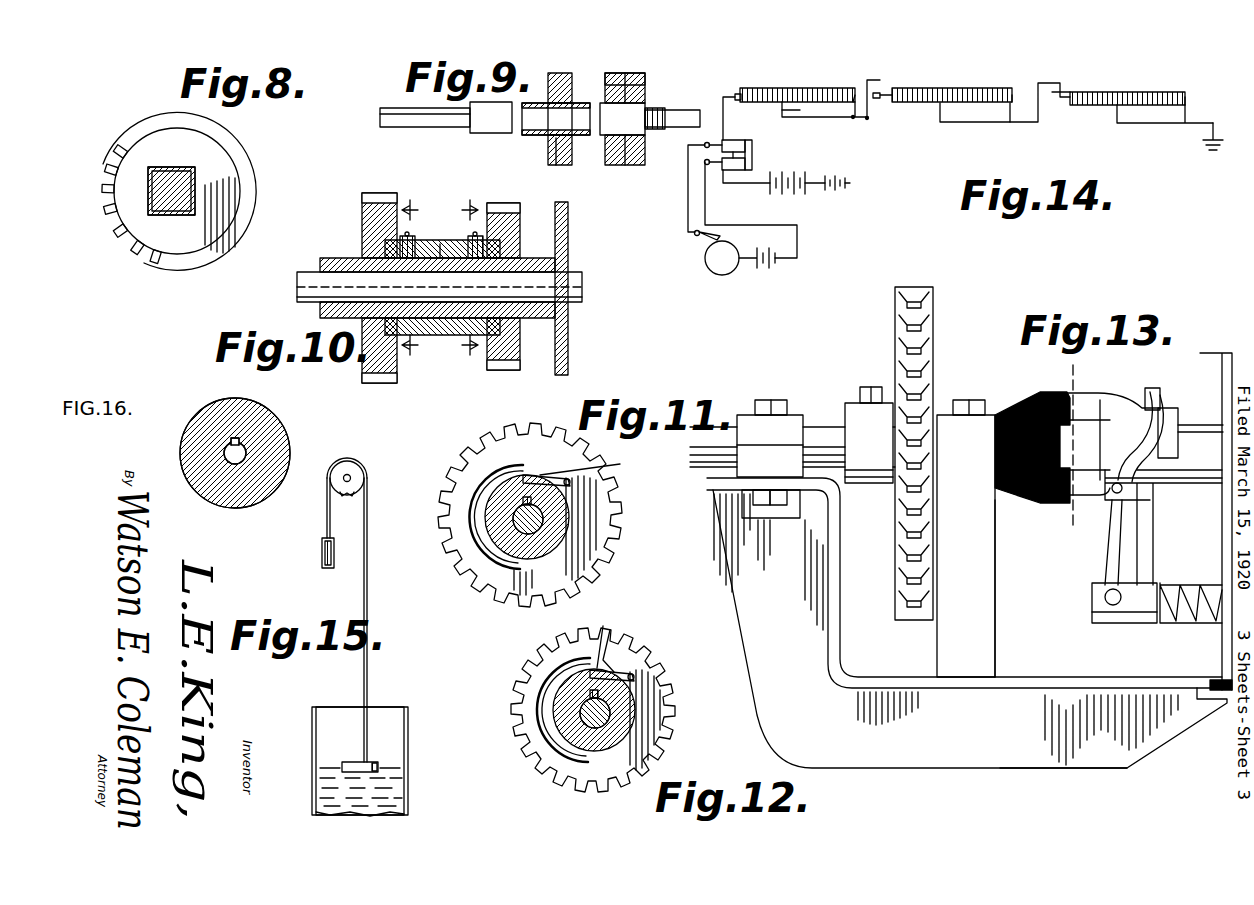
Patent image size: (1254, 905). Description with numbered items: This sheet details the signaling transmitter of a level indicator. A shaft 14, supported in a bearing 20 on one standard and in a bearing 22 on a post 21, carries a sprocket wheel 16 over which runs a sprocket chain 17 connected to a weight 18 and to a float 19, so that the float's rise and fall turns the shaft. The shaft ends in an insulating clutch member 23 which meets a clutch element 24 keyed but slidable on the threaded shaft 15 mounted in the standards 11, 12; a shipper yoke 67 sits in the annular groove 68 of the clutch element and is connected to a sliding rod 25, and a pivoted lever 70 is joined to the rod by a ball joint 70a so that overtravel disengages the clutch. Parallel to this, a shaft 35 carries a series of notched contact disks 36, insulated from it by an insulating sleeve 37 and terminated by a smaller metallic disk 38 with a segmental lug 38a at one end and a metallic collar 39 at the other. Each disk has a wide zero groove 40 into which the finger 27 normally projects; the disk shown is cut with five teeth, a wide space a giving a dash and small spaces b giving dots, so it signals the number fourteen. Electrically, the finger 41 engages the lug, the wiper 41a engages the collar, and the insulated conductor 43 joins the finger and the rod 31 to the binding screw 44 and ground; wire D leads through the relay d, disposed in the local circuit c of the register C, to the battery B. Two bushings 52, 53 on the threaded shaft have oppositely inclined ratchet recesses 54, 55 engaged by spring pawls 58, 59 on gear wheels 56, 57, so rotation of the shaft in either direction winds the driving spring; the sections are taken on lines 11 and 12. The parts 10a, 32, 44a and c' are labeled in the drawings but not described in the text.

In FIG. 13, the base plate 10a is at (1000, 770).
In FIG. 10, the supporting standard 11 is at (408, 281).
In FIG. 10, the supporting standard 12 is at (468, 283).
In FIG. 13, the shaft 14 is at (712, 432).
In FIG. 10, the shaft 15 is at (578, 288).
In FIG. 11, the shaft 15 is at (527, 519).
In FIG. 12, the shaft 15 is at (557, 712).
In FIG. 13, the shaft 15 is at (1200, 430).
In FIG. 16, the shaft 15 is at (248, 450).
In FIG. 13, the sprocket wheel 16 is at (930, 355).
In FIG. 15, the sprocket wheel 16 is at (364, 487).
In FIG. 13, the sprocket chain 17 is at (1213, 518).
In FIG. 15, the sprocket chain 17 is at (368, 569).
In FIG. 13, the weight 18 is at (765, 588).
In FIG. 15, the weight 18 is at (322, 560).
In FIG. 15, the float 19 is at (380, 765).
In FIG. 13, the bearing 20 is at (782, 420).
In FIG. 13, the post 21 is at (973, 588).
In FIG. 13, the bearing 22 is at (966, 538).
In FIG. 13, the clutch member 23 is at (1018, 408).
In FIG. 13, the clutch element 24 is at (1085, 400).
In FIG. 16, the clutch element 24 is at (225, 502).
In FIG. 13, the sliding rod 25 is at (1130, 622).
In FIG. 14, the finger 27 is at (1118, 122).
In FIG. 14, the rod 31 is at (805, 90).
In FIG. 14, the contact 32 is at (797, 118).
In FIG. 8, the shaft 35 is at (180, 185).
In FIG. 9, the shaft 35 is at (492, 125).
In FIG. 15, the shaft 35 is at (350, 475).
In FIG. 8, the contact disks 36 is at (187, 262).
In FIG. 9, the contact disks 36 is at (565, 80).
In FIG. 8, the insulating sleeve 37 is at (168, 167).
In FIG. 9, the insulating sleeve 37 is at (566, 152).
In FIG. 8, the metallic disk 38 is at (225, 208).
In FIG. 9, the metallic disk 38 is at (645, 95).
In FIG. 8, the segmental-shaped lug 38a is at (122, 150).
In FIG. 9, the segmental-shaped lug 38a is at (630, 75).
In FIG. 9, the metallic collar 39 is at (562, 166).
In FIG. 8, the groove 40 is at (110, 160).
In FIG. 14, the finger 41 is at (856, 95).
In FIG. 14, the wiper 41a is at (737, 93).
In FIG. 14, the insulated conductor 43 is at (853, 118).
In FIG. 14, the binding screw 44 is at (1029, 131).
In FIG. 14, the ground 44a is at (1213, 152).
In FIG. 10, the bushing 52 is at (465, 335).
In FIG. 12, the bushing 52 is at (600, 710).
In FIG. 10, the bushing 53 is at (425, 335).
In FIG. 11, the bushing 53 is at (486, 476).
In FIG. 12, the ratchet recess 54 is at (612, 672).
In FIG. 11, the ratchet recess 55 is at (587, 467).
In FIG. 10, the gear wheel 56 is at (503, 360).
In FIG. 12, the gear wheel 56 is at (635, 652).
In FIG. 10, the gear wheel 57 is at (372, 355).
In FIG. 11, the gear wheel 57 is at (452, 497).
In FIG. 10, the spring actuated pawl 58 is at (455, 240).
In FIG. 12, the spring actuated pawl 58 is at (604, 628).
In FIG. 10, the spring actuated pawl 59 is at (470, 238).
In FIG. 11, the spring actuated pawl 59 is at (560, 477).
In FIG. 13, the shipper yoke 67 is at (1152, 492).
In FIG. 13, the annular groove 68 is at (1140, 424).
In FIG. 13, the lever 70 is at (1160, 392).
In FIG. 13, the ball joint 70a is at (1104, 597).
In FIG. 8, the wide space a is at (102, 180).
In FIG. 8, the small space b is at (108, 208).
In FIG. 14, the small space b is at (840, 182).
In FIG. 14, the local circuit c is at (728, 201).
In FIG. 14, the switch contact c' is at (700, 245).
In FIG. 14, the register or recorder C is at (732, 270).
In FIG. 14, the battery B is at (768, 168).
In FIG. 14, the wire D is at (725, 122).
In FIG. 14, the relay d is at (733, 165).